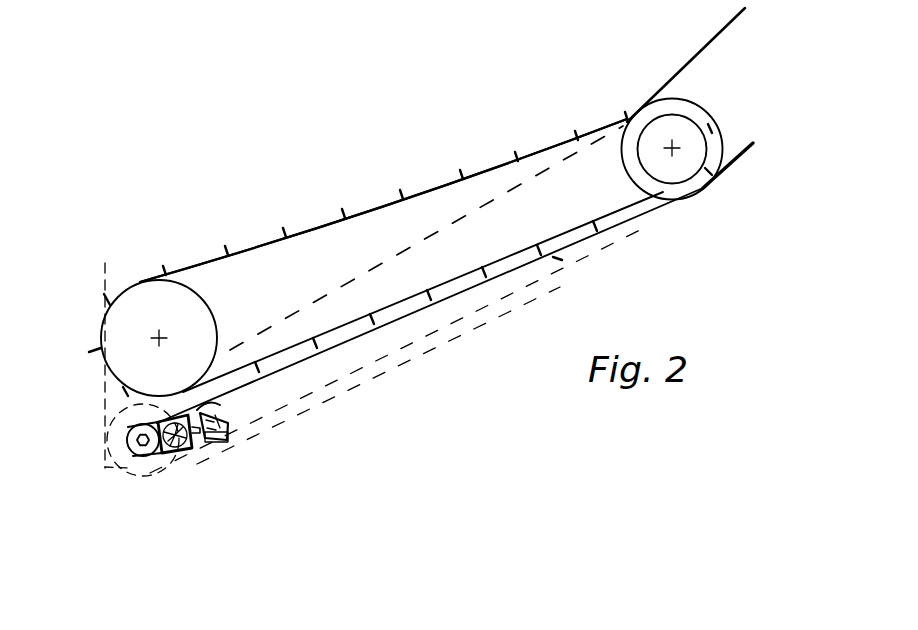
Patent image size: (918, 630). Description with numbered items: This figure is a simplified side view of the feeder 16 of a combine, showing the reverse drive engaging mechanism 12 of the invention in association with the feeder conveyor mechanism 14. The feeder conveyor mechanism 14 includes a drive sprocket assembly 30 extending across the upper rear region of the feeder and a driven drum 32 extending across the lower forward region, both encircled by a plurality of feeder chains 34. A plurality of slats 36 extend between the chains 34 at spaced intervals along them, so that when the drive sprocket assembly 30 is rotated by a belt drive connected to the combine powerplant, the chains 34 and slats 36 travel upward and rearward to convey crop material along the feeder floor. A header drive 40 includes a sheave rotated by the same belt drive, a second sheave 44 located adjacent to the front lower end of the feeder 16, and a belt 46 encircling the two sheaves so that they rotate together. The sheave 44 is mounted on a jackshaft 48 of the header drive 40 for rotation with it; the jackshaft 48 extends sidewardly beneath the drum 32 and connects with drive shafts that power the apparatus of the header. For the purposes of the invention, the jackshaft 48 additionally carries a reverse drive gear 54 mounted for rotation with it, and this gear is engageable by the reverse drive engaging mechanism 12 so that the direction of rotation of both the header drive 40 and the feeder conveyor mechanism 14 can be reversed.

The reverse drive engaging mechanism 12 is at (188, 460).
The feeder conveyor mechanism 14 is at (362, 214).
The feeder 16 is at (486, 112).
The drive sprocket assembly 30 is at (677, 110).
The driven drum 32 is at (193, 292).
The feeder chains 34 is at (310, 228).
The slats 36 is at (711, 128).
The header drive 40 is at (650, 100).
The sheave 44 is at (125, 417).
The belt 46 is at (480, 307).
The jackshaft 48 is at (127, 437).
The reverse drive gear 54 is at (127, 460).